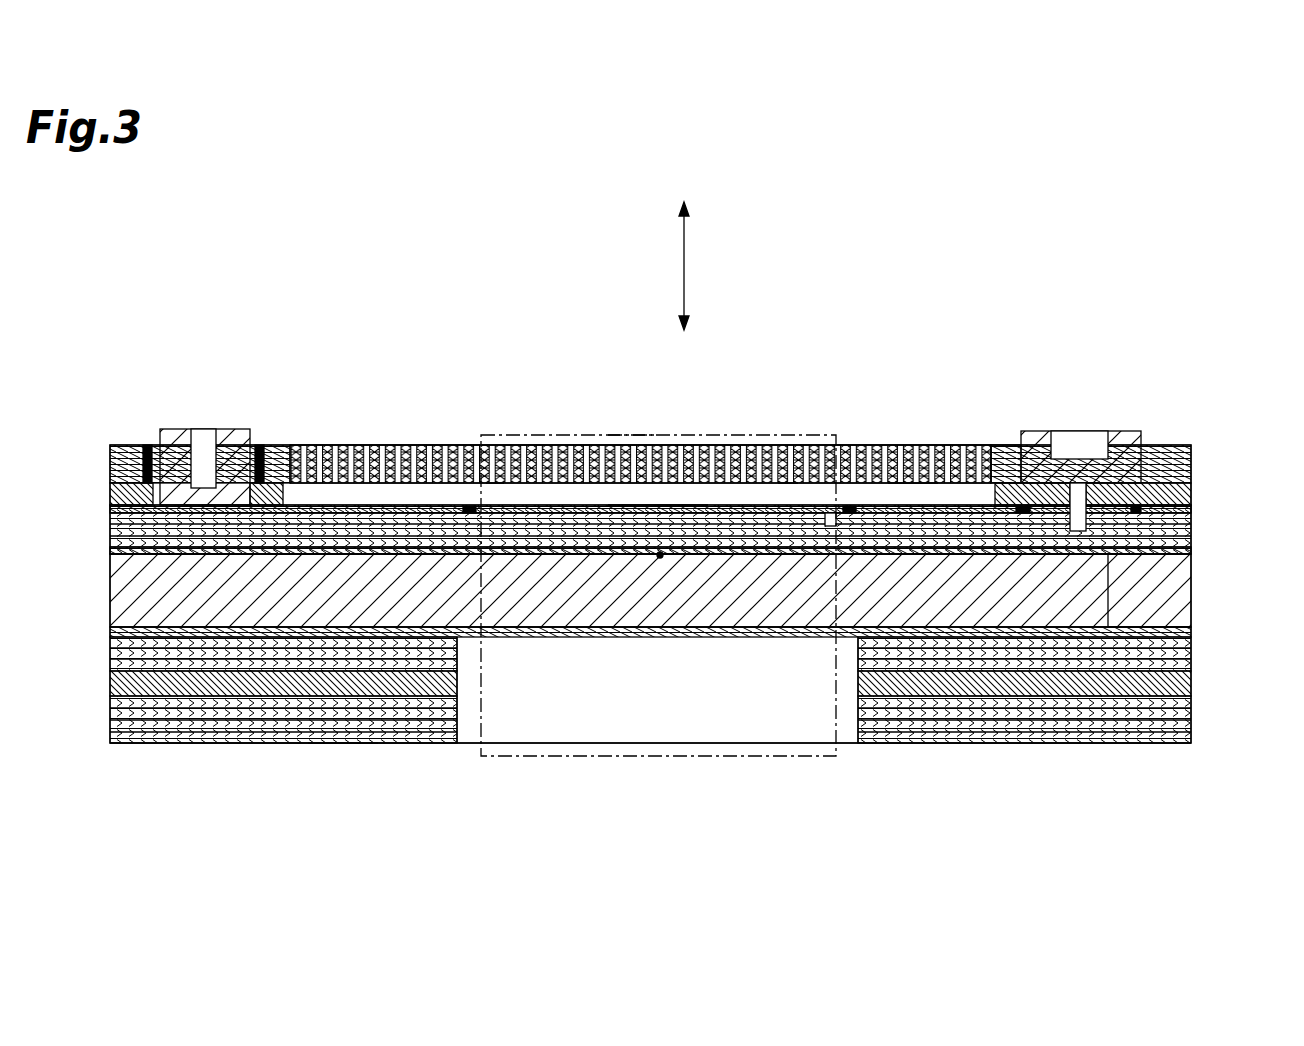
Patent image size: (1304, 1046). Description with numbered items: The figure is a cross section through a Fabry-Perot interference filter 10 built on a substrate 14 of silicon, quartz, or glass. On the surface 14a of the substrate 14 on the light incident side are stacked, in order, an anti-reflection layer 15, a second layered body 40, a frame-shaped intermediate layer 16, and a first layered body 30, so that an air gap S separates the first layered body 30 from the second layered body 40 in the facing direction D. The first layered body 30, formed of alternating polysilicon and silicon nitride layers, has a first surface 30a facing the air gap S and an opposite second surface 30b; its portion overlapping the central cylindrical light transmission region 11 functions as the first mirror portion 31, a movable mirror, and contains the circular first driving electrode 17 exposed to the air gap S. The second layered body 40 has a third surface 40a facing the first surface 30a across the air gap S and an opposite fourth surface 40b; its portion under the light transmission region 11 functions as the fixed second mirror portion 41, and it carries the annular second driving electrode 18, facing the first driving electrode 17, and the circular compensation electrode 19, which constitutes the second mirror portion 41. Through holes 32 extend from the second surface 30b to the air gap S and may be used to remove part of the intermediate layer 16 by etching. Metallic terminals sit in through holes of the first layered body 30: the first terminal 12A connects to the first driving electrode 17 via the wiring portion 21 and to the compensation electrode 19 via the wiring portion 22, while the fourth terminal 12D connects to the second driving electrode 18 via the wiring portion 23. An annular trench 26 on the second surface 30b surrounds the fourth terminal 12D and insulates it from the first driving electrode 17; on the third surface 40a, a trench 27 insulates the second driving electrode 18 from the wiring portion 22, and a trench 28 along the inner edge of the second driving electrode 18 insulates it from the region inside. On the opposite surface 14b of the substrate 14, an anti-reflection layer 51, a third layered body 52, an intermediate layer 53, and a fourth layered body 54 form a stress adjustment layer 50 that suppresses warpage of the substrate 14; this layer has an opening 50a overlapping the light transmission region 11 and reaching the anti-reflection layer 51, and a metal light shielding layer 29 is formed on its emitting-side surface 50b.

The Fabry-Perot interference filter 10 is at (1068, 262).
The light transmission region 11 is at (628, 749).
The first terminal 12A is at (1068, 432).
The fourth terminal 12D is at (195, 438).
The substrate 14 is at (571, 608).
The surface of the substrate on the light incident side 14a is at (103, 546).
The surface of the substrate on the light emitting side 14b is at (103, 622).
The anti-reflection layer 15 is at (1140, 570).
The intermediate layer 16 is at (1160, 487).
The first driving electrode 17 is at (377, 438).
The second driving electrode 18 is at (906, 495).
The compensation electrode 19 is at (655, 498).
The wiring portion 21 is at (1003, 468).
The wiring portion 22 is at (1015, 506).
The wiring portion 23 is at (252, 500).
The trench 26 is at (137, 440).
The trench 27 is at (1127, 498).
The trench 28 is at (833, 502).
The light shielding layer 29 is at (334, 737).
The first layered body 30 is at (620, 432).
The first surface 30a is at (412, 479).
The second surface 30b is at (551, 437).
The first mirror portion 31 is at (625, 428).
The through holes 32 is at (488, 475).
The second layered body 40 is at (690, 565).
The third surface 40a is at (712, 498).
The fourth surface 40b is at (1183, 553).
The second mirror portion 41 is at (653, 550).
The stress adjustment layer 50 is at (702, 722).
The opening 50a is at (850, 692).
The surface of the stress adjustment layer 50b is at (392, 737).
The anti-reflection layer 51 is at (1183, 623).
The third layered body 52 is at (1189, 631).
The intermediate layer 53 is at (1183, 675).
The fourth layered body 54 is at (1189, 690).
The air gap S is at (958, 487).
The facing direction D is at (680, 263).